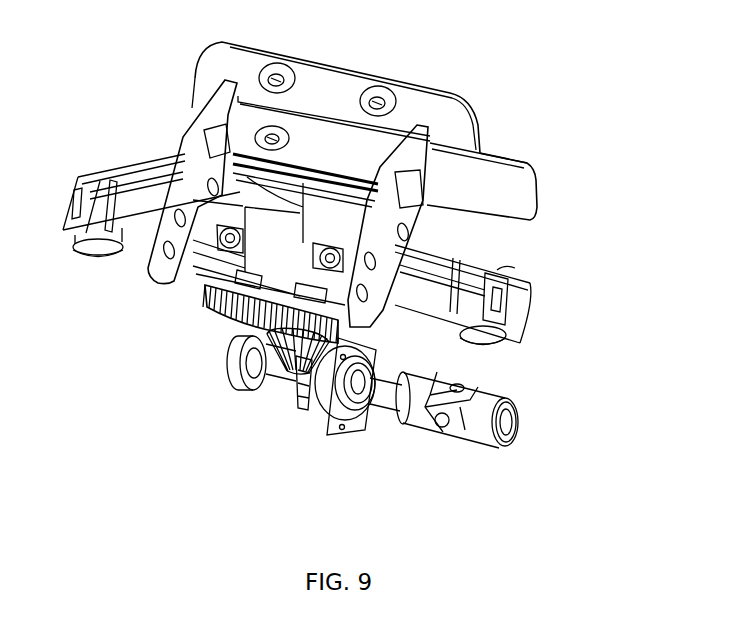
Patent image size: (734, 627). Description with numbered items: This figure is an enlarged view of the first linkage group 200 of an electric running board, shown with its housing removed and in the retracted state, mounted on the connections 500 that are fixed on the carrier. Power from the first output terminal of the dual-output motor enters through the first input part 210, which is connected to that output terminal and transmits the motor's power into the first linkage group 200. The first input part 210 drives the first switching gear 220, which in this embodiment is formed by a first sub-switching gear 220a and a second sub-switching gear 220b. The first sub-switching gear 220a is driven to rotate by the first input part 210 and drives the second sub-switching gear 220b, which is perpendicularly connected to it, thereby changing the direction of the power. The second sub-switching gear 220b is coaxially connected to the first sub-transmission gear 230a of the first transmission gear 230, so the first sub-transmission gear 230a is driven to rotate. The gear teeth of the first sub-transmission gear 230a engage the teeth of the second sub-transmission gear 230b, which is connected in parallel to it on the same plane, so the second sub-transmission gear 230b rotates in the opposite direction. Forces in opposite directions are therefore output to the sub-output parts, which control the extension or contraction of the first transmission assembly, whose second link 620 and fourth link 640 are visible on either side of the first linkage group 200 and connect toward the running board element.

The connections 500 is at (308, 86).
The second link 620 is at (152, 179).
The fourth link 640 is at (477, 272).
The first linkage group 200 is at (643, 413).
The first input part 210 is at (430, 384).
The first switching gear 220 is at (276, 424).
The first sub-switching gear 220a is at (342, 421).
The second sub-switching gear 220b is at (276, 372).
The first transmission gear 230 is at (256, 339).
The first sub-transmission gear 230a is at (348, 352).
The second sub-transmission gear 230b is at (198, 297).